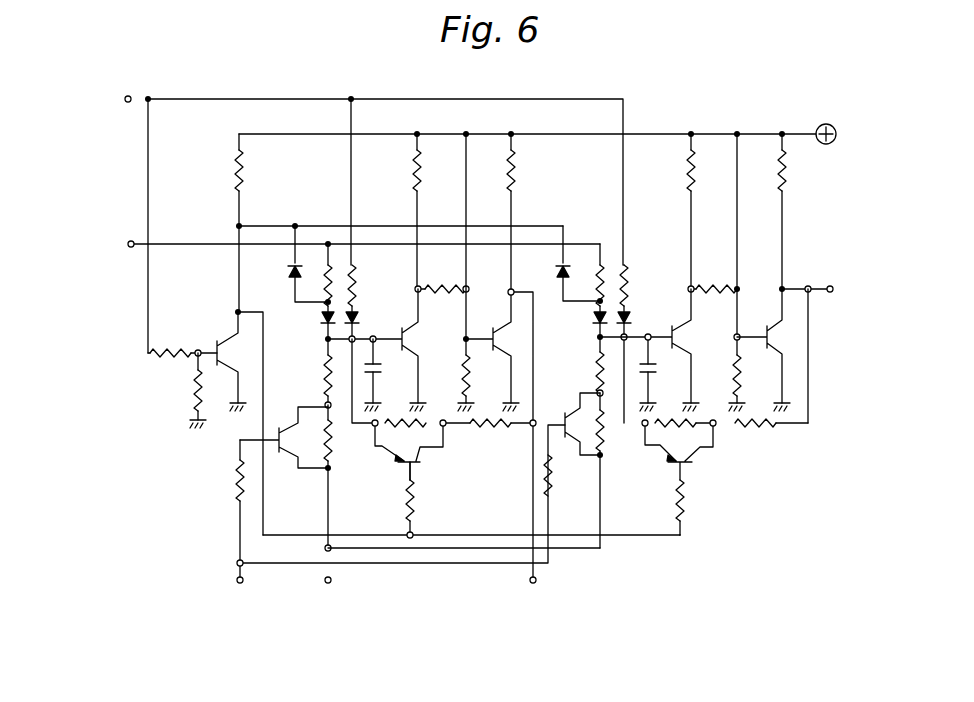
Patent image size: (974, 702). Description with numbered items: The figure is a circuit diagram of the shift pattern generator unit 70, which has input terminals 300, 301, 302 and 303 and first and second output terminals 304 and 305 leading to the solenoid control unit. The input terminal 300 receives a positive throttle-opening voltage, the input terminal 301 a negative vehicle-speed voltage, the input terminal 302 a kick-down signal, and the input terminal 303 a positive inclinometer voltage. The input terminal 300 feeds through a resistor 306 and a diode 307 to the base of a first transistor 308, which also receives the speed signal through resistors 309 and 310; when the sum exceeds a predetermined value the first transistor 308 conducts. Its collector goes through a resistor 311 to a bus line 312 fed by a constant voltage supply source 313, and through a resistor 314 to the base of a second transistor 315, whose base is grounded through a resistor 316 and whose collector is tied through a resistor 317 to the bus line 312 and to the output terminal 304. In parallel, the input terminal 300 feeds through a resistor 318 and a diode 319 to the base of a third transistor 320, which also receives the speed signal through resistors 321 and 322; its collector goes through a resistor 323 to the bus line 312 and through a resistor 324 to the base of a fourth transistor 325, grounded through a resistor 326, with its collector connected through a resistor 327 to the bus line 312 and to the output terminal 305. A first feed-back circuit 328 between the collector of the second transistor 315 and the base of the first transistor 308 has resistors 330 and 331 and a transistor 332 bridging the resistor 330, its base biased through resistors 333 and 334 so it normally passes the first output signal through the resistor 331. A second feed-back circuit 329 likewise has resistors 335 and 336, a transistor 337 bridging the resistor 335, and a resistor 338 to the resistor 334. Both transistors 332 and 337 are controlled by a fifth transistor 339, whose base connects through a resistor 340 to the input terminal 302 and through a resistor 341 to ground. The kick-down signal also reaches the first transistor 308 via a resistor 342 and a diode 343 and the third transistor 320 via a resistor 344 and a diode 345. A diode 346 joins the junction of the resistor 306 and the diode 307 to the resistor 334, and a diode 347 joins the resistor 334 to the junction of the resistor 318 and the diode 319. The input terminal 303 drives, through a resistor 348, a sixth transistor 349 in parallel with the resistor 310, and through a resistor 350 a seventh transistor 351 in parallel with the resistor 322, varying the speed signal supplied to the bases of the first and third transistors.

The shift pattern generator unit 70 is at (675, 109).
The input terminal 300 is at (128, 248).
The input terminal 301 is at (332, 582).
The input terminal 302 is at (124, 103).
The input terminal 303 is at (244, 584).
The first output terminal 304 is at (538, 583).
The second output terminal 305 is at (834, 289).
The resistor 306 is at (326, 250).
The diode 307 is at (324, 320).
The first transistor 308 is at (408, 335).
The resistor 309 is at (324, 374).
The resistor 310 is at (284, 450).
The resistor 311 is at (414, 172).
The bus line 312 is at (395, 136).
The constant voltage supply source 313 is at (836, 137).
The resistor 314 is at (453, 291).
The second transistor 315 is at (500, 336).
The resistor 316 is at (462, 380).
The resistor 317 is at (516, 160).
The resistor 318 is at (604, 268).
The diode 319 is at (598, 321).
The third transistor 320 is at (678, 334).
The resistor 321 is at (596, 376).
The resistor 322 is at (604, 452).
The resistor 323 is at (688, 176).
The resistor 324 is at (718, 287).
The fourth transistor 325 is at (774, 337).
The resistor 326 is at (733, 378).
The resistor 327 is at (788, 176).
The first feed-back circuit 328 is at (452, 449).
The second feed-back circuit 329 is at (722, 466).
The resistor 330 is at (390, 450).
The resistor 331 is at (486, 428).
The transistor 332 is at (408, 468).
The resistor 333 is at (414, 510).
The resistor 334 is at (243, 175).
The resistor 335 is at (704, 430).
The resistor 336 is at (766, 426).
The transistor 337 is at (682, 484).
The resistor 338 is at (684, 516).
The fifth transistor 339 is at (222, 340).
The resistor 340 is at (170, 358).
The resistor 341 is at (194, 410).
The resistor 342 is at (356, 255).
The diode 343 is at (360, 314).
The resistor 344 is at (628, 268).
The diode 345 is at (630, 316).
The diode 346 is at (292, 272).
The diode 347 is at (566, 254).
The resistor 348 is at (238, 490).
The sixth transistor 349 is at (324, 499).
The resistor 350 is at (566, 504).
The seventh transistor 351 is at (570, 437).